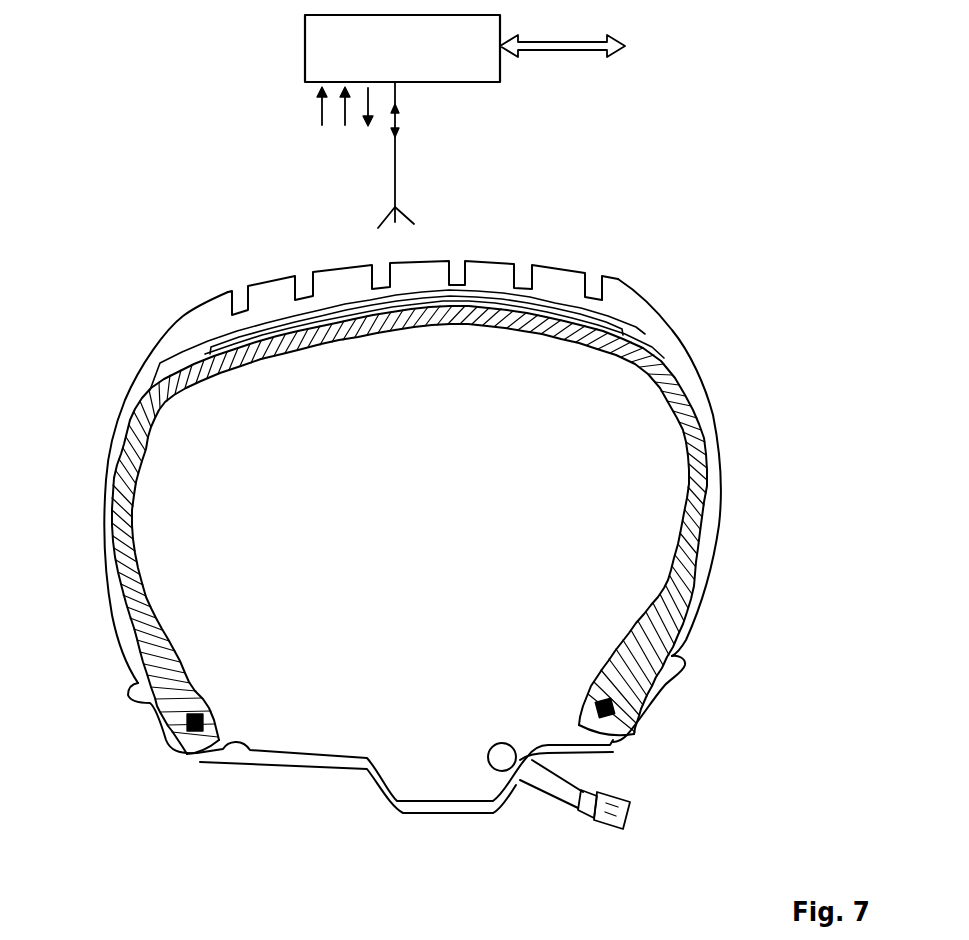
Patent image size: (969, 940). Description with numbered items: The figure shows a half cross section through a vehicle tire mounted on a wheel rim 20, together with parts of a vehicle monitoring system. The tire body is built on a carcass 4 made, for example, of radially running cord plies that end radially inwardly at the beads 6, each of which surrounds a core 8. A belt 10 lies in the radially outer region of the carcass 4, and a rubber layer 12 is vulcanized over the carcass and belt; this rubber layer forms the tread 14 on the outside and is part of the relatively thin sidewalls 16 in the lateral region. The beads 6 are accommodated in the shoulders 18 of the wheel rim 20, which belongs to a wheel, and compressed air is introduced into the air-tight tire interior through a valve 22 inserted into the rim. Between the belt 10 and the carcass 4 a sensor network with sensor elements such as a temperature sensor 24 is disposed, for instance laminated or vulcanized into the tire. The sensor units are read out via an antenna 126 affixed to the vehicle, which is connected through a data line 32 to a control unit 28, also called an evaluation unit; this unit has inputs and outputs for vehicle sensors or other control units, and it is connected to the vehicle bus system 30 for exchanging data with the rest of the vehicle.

The control unit 28 is at (305, 46).
The vehicle bus system 30 is at (603, 52).
The data line 32 is at (398, 147).
The antenna 126 is at (398, 200).
The tread 14 is at (415, 272).
The temperature sensor 24 is at (530, 308).
The belt 10 is at (607, 312).
The carcass 4 is at (673, 378).
The rubber layer 12 is at (429, 515).
The sidewall 16 is at (720, 507).
The bead 6 is at (153, 715).
The core 8 is at (193, 731).
The shoulder 18 is at (172, 753).
The wheel rim 20 is at (337, 773).
The valve 22 is at (550, 787).